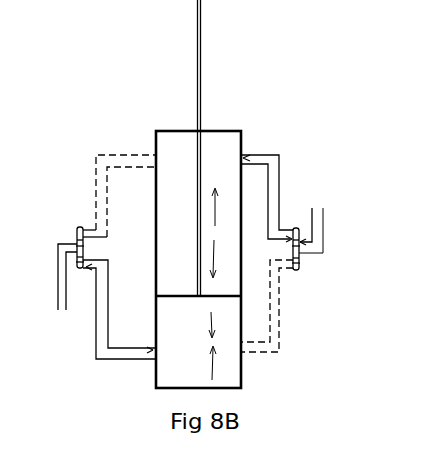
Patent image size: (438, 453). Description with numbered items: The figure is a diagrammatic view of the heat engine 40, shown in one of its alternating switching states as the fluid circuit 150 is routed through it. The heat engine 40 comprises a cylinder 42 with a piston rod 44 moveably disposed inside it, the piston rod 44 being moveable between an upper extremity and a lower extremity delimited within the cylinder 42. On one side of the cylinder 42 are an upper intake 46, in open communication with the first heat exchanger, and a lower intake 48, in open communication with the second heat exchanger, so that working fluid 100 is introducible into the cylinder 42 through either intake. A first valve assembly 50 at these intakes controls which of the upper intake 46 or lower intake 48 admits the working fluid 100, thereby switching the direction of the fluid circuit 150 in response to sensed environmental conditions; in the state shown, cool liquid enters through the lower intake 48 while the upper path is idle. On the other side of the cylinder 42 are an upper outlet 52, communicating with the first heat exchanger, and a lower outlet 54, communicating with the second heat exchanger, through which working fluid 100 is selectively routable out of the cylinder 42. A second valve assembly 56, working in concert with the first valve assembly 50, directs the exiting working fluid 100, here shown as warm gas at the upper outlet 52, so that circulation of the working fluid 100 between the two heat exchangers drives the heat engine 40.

The heat engine 40 is at (277, 61).
The cylinder 42 is at (178, 130).
The piston rod 44 is at (201, 86).
The upper intake 46 is at (78, 230).
The lower intake 48 is at (79, 264).
The first valve assembly 50 is at (77, 236).
The upper outlet 52 is at (299, 228).
The lower outlet 54 is at (299, 268).
The second valve assembly 56 is at (300, 253).
The working fluid 100 is at (212, 365).
The fluid circuit 150 is at (130, 360).